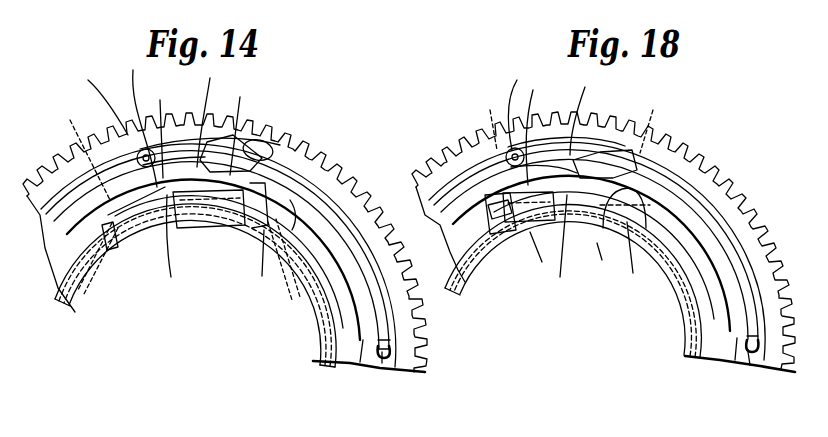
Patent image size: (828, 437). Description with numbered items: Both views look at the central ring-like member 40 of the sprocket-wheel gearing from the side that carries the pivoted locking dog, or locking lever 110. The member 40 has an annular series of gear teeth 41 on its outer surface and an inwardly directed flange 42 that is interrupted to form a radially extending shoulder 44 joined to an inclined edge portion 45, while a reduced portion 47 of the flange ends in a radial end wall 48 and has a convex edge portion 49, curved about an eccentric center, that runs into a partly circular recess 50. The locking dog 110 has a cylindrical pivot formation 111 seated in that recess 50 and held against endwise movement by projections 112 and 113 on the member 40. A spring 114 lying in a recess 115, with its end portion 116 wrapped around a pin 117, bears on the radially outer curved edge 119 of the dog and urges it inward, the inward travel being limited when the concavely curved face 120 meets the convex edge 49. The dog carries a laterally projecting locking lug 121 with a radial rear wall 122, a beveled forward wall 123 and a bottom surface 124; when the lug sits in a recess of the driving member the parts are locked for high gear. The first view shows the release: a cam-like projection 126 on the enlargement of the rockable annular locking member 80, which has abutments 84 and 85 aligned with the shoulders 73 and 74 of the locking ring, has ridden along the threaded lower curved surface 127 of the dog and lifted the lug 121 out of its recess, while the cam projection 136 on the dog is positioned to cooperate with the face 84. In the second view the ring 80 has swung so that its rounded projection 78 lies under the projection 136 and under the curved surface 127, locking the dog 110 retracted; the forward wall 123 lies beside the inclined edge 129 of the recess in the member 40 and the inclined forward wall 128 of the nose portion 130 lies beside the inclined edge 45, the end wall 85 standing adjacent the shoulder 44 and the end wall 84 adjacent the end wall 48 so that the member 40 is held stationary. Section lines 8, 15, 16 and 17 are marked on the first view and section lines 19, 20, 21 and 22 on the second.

In FIG. 14, the ring-like member 40 is at (403, 360).
In FIG. 18, the ring-like member 40 is at (767, 355).
In FIG. 14, the gear teeth 41 is at (327, 170).
In FIG. 18, the gear teeth 41 is at (757, 200).
In FIG. 14, the inwardly directed flange 42 is at (338, 354).
In FIG. 14, the radially extending shoulder 44 is at (118, 198).
In FIG. 18, the radially extending shoulder 44 is at (497, 235).
In FIG. 14, the inclined edge portion 45 is at (138, 161).
In FIG. 18, the inclined edge portion 45 is at (510, 175).
In FIG. 14, the reduced portion 47 is at (312, 292).
In FIG. 18, the reduced portion 47 is at (700, 300).
In FIG. 14, the radial end wall 48 is at (318, 258).
In FIG. 18, the radial end wall 48 is at (690, 265).
In FIG. 14, the convex edge portion 49 is at (339, 290).
In FIG. 18, the convex edge portion 49 is at (705, 283).
In FIG. 14, the partly circular recess 50 is at (392, 346).
In FIG. 18, the partly circular recess 50 is at (762, 345).
In FIG. 14, the shoulder 73 is at (50, 211).
In FIG. 14, the shoulder 74 is at (292, 189).
In FIG. 18, the convex projection 78 is at (648, 179).
In FIG. 14, the rockable annular locking member 80 is at (252, 261).
In FIG. 18, the rockable annular locking member 80 is at (625, 258).
In FIG. 14, the abutment 84 is at (244, 220).
In FIG. 18, the abutment 84 is at (665, 208).
In FIG. 14, the abutment 85 is at (112, 270).
In FIG. 18, the abutment 85 is at (500, 210).
In FIG. 14, the locking dog 110 is at (340, 227).
In FIG. 18, the locking dog 110 is at (748, 242).
In FIG. 14, the pivot formation 111 is at (382, 364).
In FIG. 18, the pivot formation 111 is at (748, 353).
In FIG. 14, the projection 112 is at (363, 342).
In FIG. 18, the projection 112 is at (735, 340).
In FIG. 14, the projection 113 is at (390, 332).
In FIG. 18, the projection 113 is at (762, 338).
In FIG. 14, the spring 114 is at (213, 135).
In FIG. 18, the spring 114 is at (553, 158).
In FIG. 14, the recess 115 is at (222, 160).
In FIG. 18, the recess 115 is at (600, 150).
In FIG. 18, the end portion 116 is at (508, 107).
In FIG. 14, the pin 117 is at (94, 103).
In FIG. 14, the curved edge 119 is at (290, 150).
In FIG. 18, the curved edge 119 is at (650, 150).
In FIG. 14, the concavely curved face 120 is at (325, 322).
In FIG. 18, the concavely curved face 120 is at (707, 286).
In FIG. 14, the locking lug 121 is at (240, 172).
In FIG. 18, the locking lug 121 is at (628, 165).
In FIG. 14, the rear wall 122 is at (256, 180).
In FIG. 18, the rear wall 122 is at (625, 178).
In FIG. 14, the forward wall 123 is at (226, 158).
In FIG. 18, the forward wall 123 is at (592, 147).
In FIG. 14, the bottom surface 124 is at (218, 166).
In FIG. 18, the bottom surface 124 is at (573, 245).
In FIG. 14, the cam-like projection 126 is at (212, 232).
In FIG. 14, the lower curved surface 127 is at (184, 245).
In FIG. 18, the lower curved surface 127 is at (578, 222).
In FIG. 14, the inclined forward wall 128 is at (128, 123).
In FIG. 18, the inclined forward wall 128 is at (544, 131).
In FIG. 14, the inclined edge 129 is at (195, 118).
In FIG. 18, the inclined edge 129 is at (594, 115).
In FIG. 14, the nose portion 130 is at (160, 184).
In FIG. 18, the nose portion 130 is at (517, 243).
In FIG. 14, the cam projection 136 is at (325, 206).
In FIG. 18, the cam projection 136 is at (700, 172).
In FIG. 14, the section line 8 is at (95, 248).
In FIG. 14, the section line 15 is at (86, 112).
In FIG. 14, the section line 16 is at (171, 94).
In FIG. 14, the section line 17 is at (258, 93).
In FIG. 18, the section line 19 is at (668, 118).
In FIG. 18, the section line 20 is at (490, 108).
In FIG. 18, the section line 21 is at (457, 222).
In FIG. 14, the section line 22 is at (300, 216).